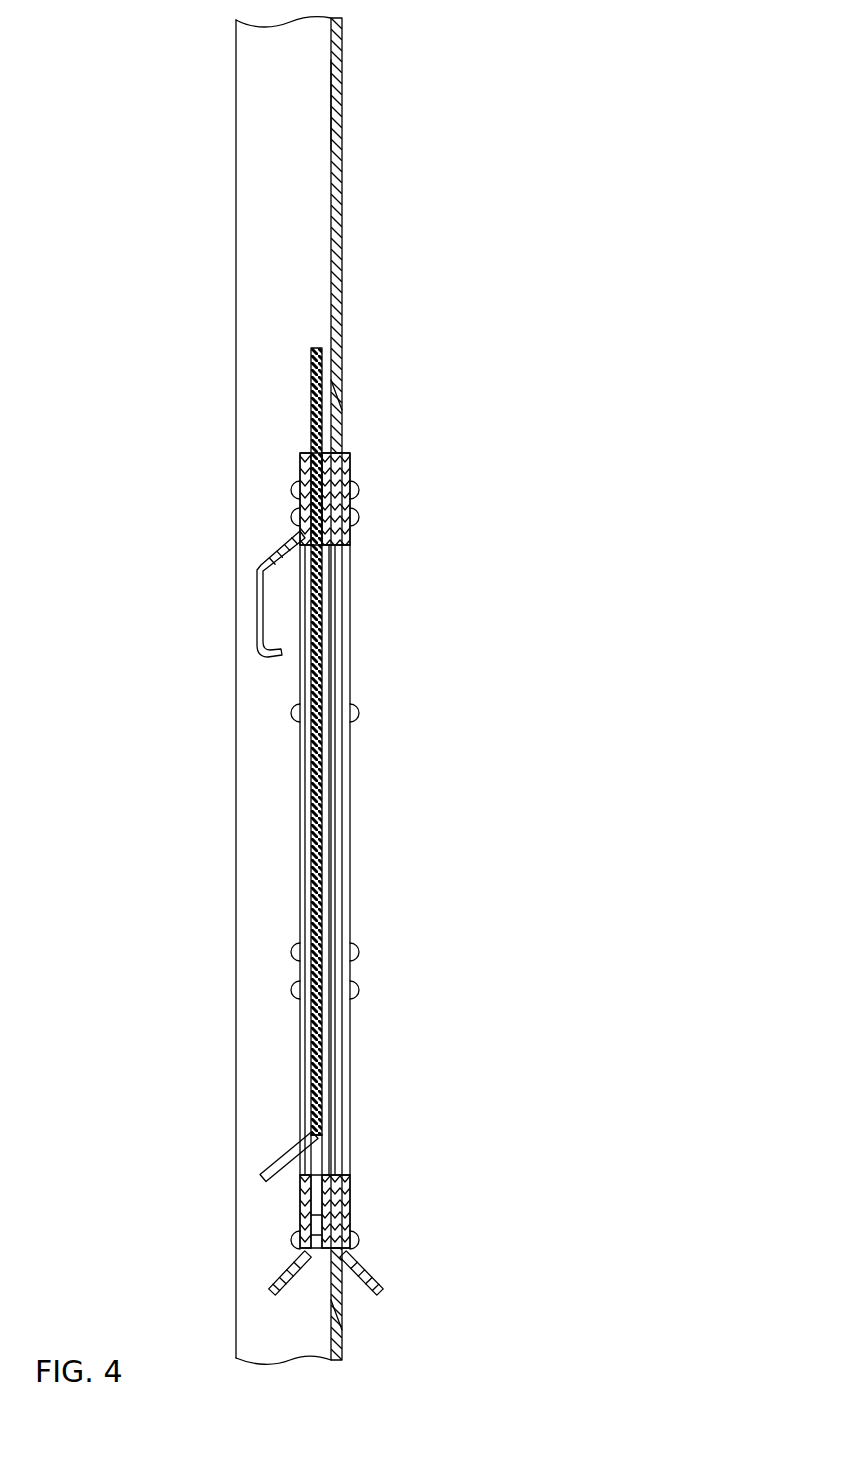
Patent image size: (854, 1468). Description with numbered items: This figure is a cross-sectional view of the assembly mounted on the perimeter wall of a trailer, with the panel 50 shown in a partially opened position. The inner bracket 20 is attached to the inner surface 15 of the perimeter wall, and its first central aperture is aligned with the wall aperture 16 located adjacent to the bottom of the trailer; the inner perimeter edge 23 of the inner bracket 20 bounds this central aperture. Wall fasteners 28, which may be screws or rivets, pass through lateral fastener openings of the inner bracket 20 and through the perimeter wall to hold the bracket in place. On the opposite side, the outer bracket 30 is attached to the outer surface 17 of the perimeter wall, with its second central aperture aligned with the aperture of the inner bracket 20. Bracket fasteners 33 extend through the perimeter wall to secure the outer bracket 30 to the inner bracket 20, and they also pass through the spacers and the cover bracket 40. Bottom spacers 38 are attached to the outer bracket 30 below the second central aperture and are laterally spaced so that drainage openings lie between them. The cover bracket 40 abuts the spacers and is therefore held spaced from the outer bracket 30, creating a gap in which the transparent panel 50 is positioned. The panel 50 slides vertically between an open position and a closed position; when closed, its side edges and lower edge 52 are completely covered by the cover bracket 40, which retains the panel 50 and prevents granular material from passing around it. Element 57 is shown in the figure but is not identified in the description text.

The inner surface 15 is at (343, 167).
The wall aperture 16 is at (251, 198).
The outer surface 17 is at (330, 106).
The inner bracket 20 is at (350, 456).
The inner perimeter edge 23 is at (350, 1178).
The wall fasteners 28 is at (360, 517).
The outer bracket 30 is at (343, 397).
The bracket fasteners 33 is at (360, 492).
The bottom spacers 38 is at (314, 1255).
The cover bracket 40 is at (303, 1197).
The panel 50 is at (311, 392).
The lower edge 52 is at (334, 1152).
The pin 57 is at (278, 1152).